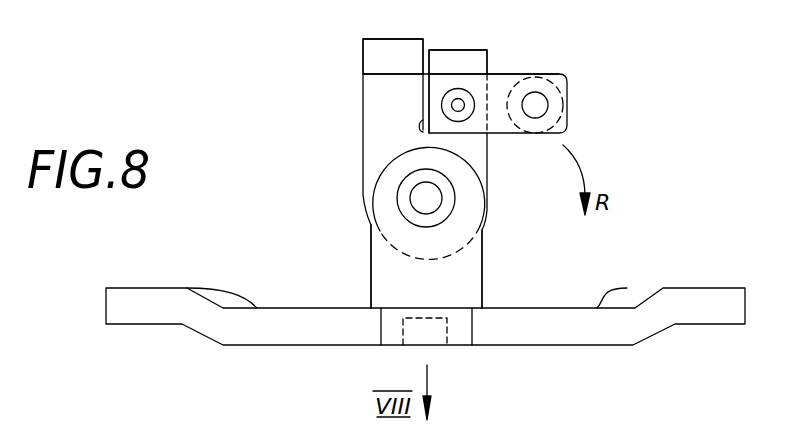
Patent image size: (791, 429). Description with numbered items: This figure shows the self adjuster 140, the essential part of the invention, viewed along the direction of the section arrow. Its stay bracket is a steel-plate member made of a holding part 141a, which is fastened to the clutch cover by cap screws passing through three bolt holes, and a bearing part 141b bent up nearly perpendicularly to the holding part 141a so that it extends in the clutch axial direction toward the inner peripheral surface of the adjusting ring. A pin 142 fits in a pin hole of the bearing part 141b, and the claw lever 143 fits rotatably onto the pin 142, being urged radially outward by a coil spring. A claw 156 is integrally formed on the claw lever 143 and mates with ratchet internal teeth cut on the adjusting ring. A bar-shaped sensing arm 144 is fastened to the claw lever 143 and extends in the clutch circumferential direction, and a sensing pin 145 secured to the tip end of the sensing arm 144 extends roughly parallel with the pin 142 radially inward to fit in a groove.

The self adjuster 140 is at (270, 140).
The claw 156 is at (373, 58).
The claw lever 143 is at (478, 63).
The sensing arm 144 is at (562, 75).
The sensing pin 145 is at (537, 107).
The pin 142 is at (424, 197).
The bearing part 141b is at (470, 272).
The holding part 141a is at (563, 345).